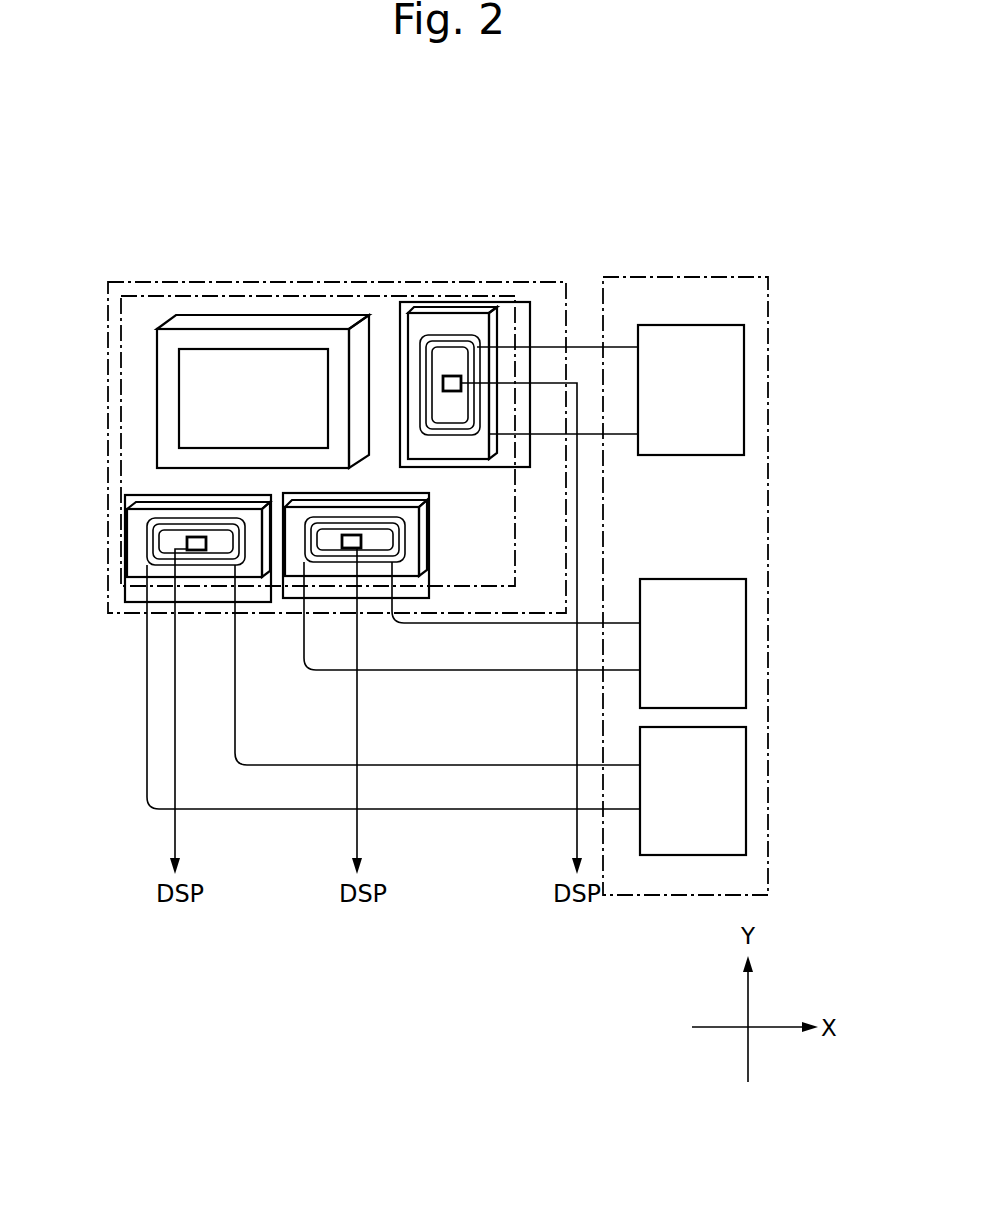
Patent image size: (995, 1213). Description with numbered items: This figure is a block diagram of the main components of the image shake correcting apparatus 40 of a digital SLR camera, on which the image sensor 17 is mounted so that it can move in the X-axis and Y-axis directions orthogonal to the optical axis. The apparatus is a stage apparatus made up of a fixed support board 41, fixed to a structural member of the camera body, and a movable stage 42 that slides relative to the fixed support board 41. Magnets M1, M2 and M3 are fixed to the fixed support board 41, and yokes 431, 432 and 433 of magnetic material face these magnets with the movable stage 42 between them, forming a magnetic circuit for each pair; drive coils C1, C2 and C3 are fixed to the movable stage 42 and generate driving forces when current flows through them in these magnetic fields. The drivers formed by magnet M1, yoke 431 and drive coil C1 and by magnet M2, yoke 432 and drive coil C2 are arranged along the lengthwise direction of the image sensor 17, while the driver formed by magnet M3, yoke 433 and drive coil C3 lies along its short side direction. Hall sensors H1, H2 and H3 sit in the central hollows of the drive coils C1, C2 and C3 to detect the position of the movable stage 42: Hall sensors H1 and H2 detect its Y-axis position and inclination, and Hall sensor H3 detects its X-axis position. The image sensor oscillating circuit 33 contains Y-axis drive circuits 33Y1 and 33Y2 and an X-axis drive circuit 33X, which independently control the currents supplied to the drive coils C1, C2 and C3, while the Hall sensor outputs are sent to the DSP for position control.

The image shake correcting apparatus 40 is at (377, 268).
The movable stage 42 is at (127, 290).
The fixed support board 41 is at (198, 296).
The image sensor 17 is at (267, 342).
The yoke 433 is at (525, 325).
The magnet M3 is at (445, 310).
The drive coil C3 is at (462, 337).
The Hall sensor H3 is at (452, 392).
The yoke 431 is at (137, 595).
The magnet M1 is at (143, 500).
The drive coil C1 is at (145, 539).
The Hall sensor H1 is at (202, 550).
The yoke 432 is at (377, 595).
The magnet M2 is at (423, 522).
The drive coil C2 is at (405, 545).
The Hall sensor H2 is at (350, 548).
The image sensor oscillating circuit 33 is at (677, 277).
The X-axis drive circuit 33X is at (744, 382).
The Y-axis drive circuit 33Y2 is at (746, 647).
The Y-axis drive circuit 33Y1 is at (746, 787).